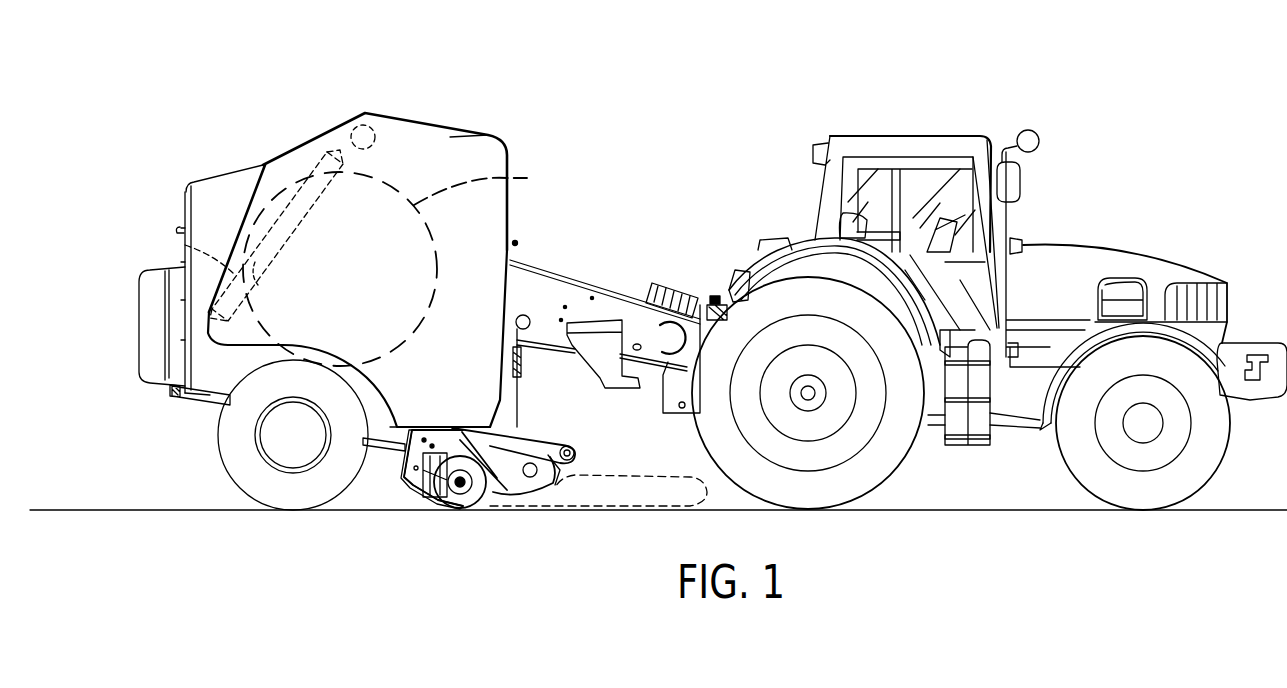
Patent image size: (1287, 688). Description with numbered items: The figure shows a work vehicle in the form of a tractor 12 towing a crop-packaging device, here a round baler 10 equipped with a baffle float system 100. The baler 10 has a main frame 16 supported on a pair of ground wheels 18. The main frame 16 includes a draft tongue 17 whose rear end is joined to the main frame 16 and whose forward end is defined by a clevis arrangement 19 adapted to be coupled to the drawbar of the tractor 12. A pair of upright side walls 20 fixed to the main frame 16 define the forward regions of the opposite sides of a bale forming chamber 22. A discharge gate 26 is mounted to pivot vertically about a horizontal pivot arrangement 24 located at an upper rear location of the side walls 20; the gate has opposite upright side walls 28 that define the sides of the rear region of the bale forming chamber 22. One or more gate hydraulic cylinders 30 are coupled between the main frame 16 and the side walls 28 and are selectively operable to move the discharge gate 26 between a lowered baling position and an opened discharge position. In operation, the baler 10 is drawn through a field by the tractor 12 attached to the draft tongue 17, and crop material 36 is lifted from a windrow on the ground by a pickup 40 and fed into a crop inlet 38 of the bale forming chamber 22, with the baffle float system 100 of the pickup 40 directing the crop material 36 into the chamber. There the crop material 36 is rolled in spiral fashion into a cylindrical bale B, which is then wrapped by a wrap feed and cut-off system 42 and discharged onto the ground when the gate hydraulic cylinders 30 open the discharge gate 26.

The baler 10 is at (211, 156).
The tractor 12 is at (1133, 252).
The main frame 16 is at (222, 398).
The draft tongue 17 is at (546, 292).
The ground wheels 18 is at (262, 487).
The clevis arrangement 19 is at (683, 300).
The upright side walls 20 is at (460, 158).
The bale forming chamber 22 is at (294, 167).
The horizontal pivot arrangement 24 is at (367, 113).
The discharge gate 26 is at (211, 159).
The opposite upright side walls 28 is at (259, 182).
The gate hydraulic cylinders 30 is at (185, 252).
The crop material 36 is at (570, 507).
The crop inlet 38 is at (504, 495).
The pickup 40 is at (439, 512).
The wrap feed and cut-off system 42 is at (165, 360).
The baffle float system 100 is at (528, 420).
The bale B is at (394, 266).